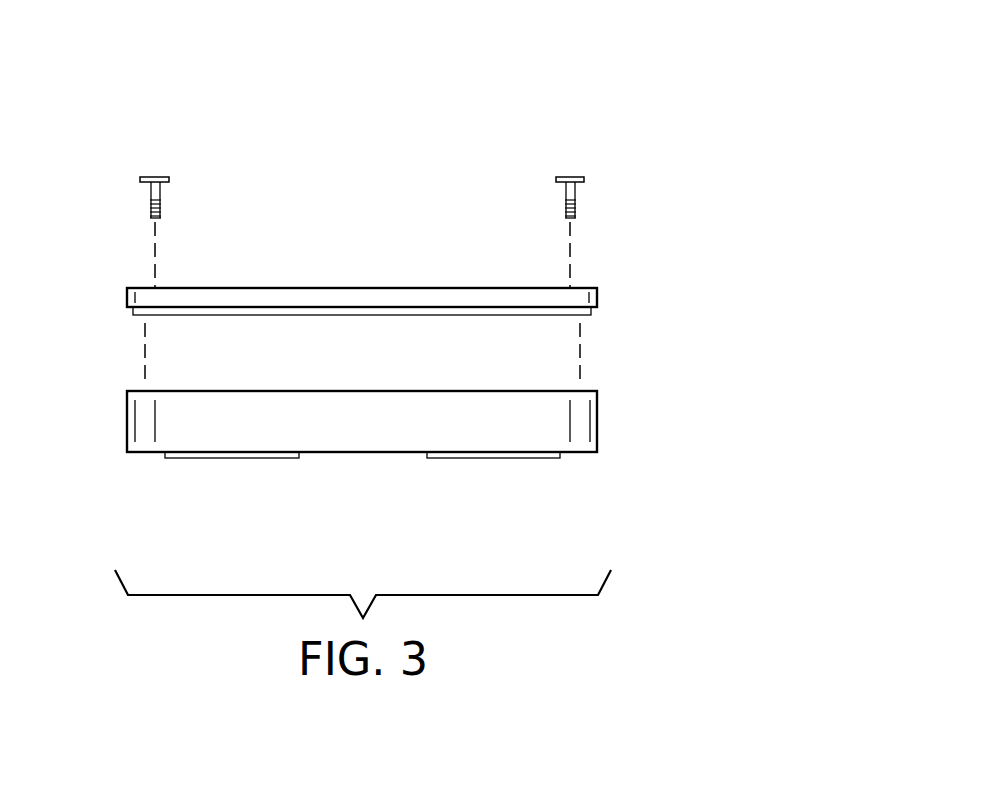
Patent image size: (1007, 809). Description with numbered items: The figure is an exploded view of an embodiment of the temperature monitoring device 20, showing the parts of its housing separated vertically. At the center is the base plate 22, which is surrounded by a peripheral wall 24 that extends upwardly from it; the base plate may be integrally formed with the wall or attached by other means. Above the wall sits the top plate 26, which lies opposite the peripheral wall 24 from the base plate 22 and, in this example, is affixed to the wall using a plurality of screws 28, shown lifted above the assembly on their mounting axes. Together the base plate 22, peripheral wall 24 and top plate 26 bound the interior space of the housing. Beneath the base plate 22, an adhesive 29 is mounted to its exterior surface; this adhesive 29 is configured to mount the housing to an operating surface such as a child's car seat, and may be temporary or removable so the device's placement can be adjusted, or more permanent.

The temperature monitoring device 20 is at (572, 105).
The base plate 22 is at (587, 452).
The peripheral wall 24 is at (575, 413).
The top plate 26 is at (597, 302).
The screws 28 is at (140, 180).
The adhesive 29 is at (188, 458).